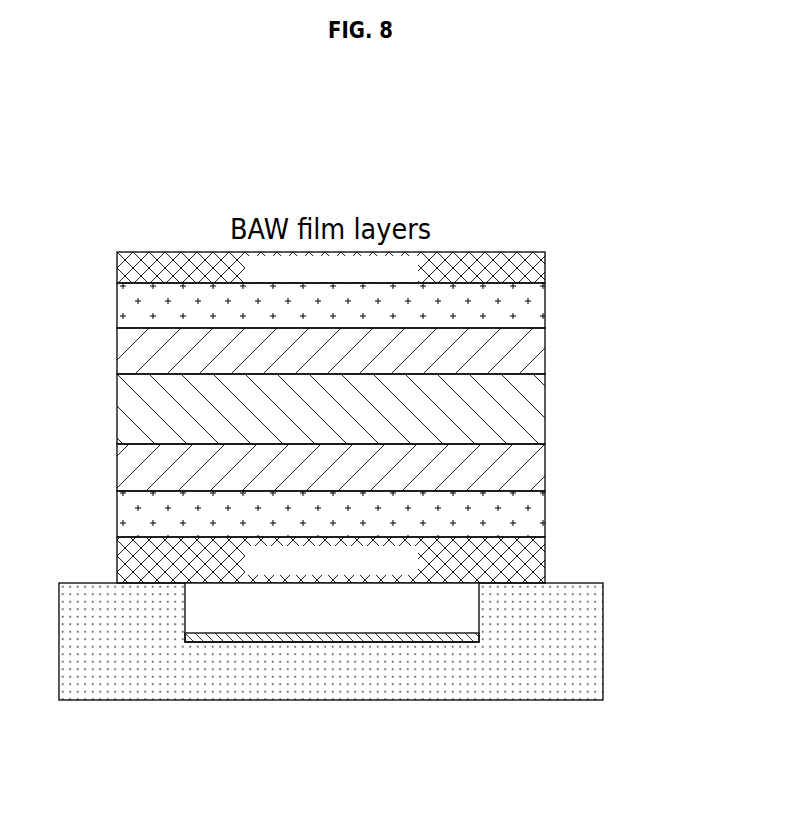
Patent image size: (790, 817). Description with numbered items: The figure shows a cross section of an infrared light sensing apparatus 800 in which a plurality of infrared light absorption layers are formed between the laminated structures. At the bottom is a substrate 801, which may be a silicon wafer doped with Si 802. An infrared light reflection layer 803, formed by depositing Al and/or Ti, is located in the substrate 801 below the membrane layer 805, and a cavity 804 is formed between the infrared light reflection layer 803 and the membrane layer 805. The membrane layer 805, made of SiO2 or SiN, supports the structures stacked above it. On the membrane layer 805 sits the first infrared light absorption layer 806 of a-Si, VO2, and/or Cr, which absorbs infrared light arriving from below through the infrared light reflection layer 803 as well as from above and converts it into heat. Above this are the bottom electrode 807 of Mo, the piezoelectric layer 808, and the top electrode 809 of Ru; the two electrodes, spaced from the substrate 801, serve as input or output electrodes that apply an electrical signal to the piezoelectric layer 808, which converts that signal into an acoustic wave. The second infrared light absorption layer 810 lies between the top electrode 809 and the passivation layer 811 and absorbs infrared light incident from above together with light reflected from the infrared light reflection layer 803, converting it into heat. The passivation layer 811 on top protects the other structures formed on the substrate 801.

The infrared light sensing apparatus 800 is at (487, 182).
The substrate 801 is at (375, 678).
The Si 802 is at (461, 688).
The infrared light reflection layer 803 is at (333, 638).
The cavity 804 is at (245, 617).
The membrane layer 805 is at (545, 561).
The first infrared light absorption layer 806 is at (545, 516).
The bottom electrode 807 is at (545, 460).
The piezoelectric layer 808 is at (545, 401).
The top electrode 809 is at (545, 353).
The second infrared light absorption layer 810 is at (545, 308).
The passivation layer 811 is at (545, 270).